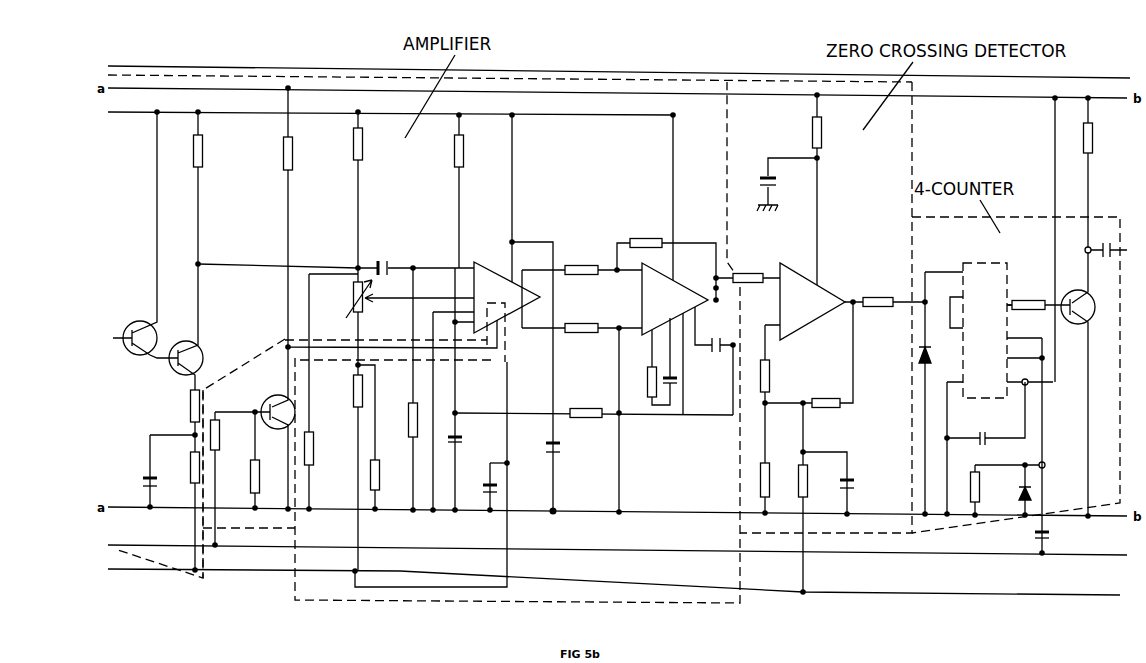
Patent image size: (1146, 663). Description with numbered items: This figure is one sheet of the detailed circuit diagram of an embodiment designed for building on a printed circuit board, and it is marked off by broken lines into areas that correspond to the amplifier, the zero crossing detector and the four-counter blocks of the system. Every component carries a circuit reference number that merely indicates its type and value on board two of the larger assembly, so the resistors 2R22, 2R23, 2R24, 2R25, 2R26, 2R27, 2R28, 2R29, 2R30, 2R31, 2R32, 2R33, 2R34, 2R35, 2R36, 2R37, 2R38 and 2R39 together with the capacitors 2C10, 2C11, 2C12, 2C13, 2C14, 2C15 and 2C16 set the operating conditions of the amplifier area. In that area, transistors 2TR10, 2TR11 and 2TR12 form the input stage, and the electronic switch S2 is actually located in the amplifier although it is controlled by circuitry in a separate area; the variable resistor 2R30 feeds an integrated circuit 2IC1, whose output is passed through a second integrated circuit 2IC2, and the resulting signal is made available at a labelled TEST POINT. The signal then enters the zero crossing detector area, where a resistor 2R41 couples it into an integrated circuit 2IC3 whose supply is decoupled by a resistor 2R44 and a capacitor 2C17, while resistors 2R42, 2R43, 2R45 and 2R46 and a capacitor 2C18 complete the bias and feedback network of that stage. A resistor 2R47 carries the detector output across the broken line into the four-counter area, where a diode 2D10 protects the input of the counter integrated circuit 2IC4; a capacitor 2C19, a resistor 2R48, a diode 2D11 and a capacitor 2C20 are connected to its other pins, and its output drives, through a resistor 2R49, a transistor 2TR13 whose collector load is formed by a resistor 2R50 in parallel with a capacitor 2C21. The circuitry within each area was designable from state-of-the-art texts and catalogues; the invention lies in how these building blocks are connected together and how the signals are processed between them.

The transistor 2TR10 is at (141, 235).
The transistor 2TR11 is at (206, 327).
The transistor 2TR12 is at (255, 429).
The transistor 2TR13 is at (1091, 384).
The resistor 2R22 is at (184, 188).
The resistor 2R23 is at (175, 421).
The resistor 2R24 is at (180, 505).
The resistor 2R25 is at (230, 478).
The resistor 2R26 is at (240, 461).
The resistor 2R27 is at (377, 217).
The resistor 2R28 is at (324, 393).
The resistor 2R29 is at (343, 190).
The resistor 2R30 is at (391, 318).
The resistor 2R31 is at (341, 468).
The resistor 2R32 is at (383, 438).
The resistor 2R33 is at (398, 390).
The resistor 2R34 is at (442, 190).
The resistor 2R35 is at (582, 269).
The resistor 2R36 is at (582, 328).
The resistor 2R37 is at (594, 421).
The resistor 2R38 is at (666, 261).
The resistor 2R39 is at (645, 367).
The resistor 2R41 is at (748, 276).
The resistor 2R42 is at (779, 365).
The resistor 2R43 is at (747, 459).
The resistor 2R44 is at (802, 188).
The resistor 2R45 is at (809, 363).
The resistor 2R46 is at (818, 497).
The resistor 2R47 is at (886, 303).
The resistor 2R48 is at (998, 485).
The resistor 2R49 is at (1034, 304).
The resistor 2R50 is at (1102, 172).
The capacitor 2C10 is at (143, 472).
The capacitor 2C11 is at (307, 258).
The capacitor 2C12 is at (467, 417).
The capacitor 2C13 is at (484, 486).
The capacitor 2C14 is at (548, 378).
The capacitor 2C15 is at (688, 364).
The capacitor 2C16 is at (715, 361).
The capacitor 2C17 is at (777, 184).
The capacitor 2C18 is at (843, 484).
The capacitor 2C19 is at (984, 449).
The capacitor 2C20 is at (1025, 445).
The capacitor 2C21 is at (1106, 249).
The integrated circuit 2IC1 is at (476, 314).
The integrated circuit 2IC2 is at (649, 299).
The integrated circuit 2IC3 is at (824, 292).
The integrated circuit 2IC4 is at (991, 246).
The diode 2D10 is at (942, 394).
The diode 2D11 is at (1007, 491).
The electronic switch S2 is at (262, 497).
The test point TEST POINT is at (727, 294).